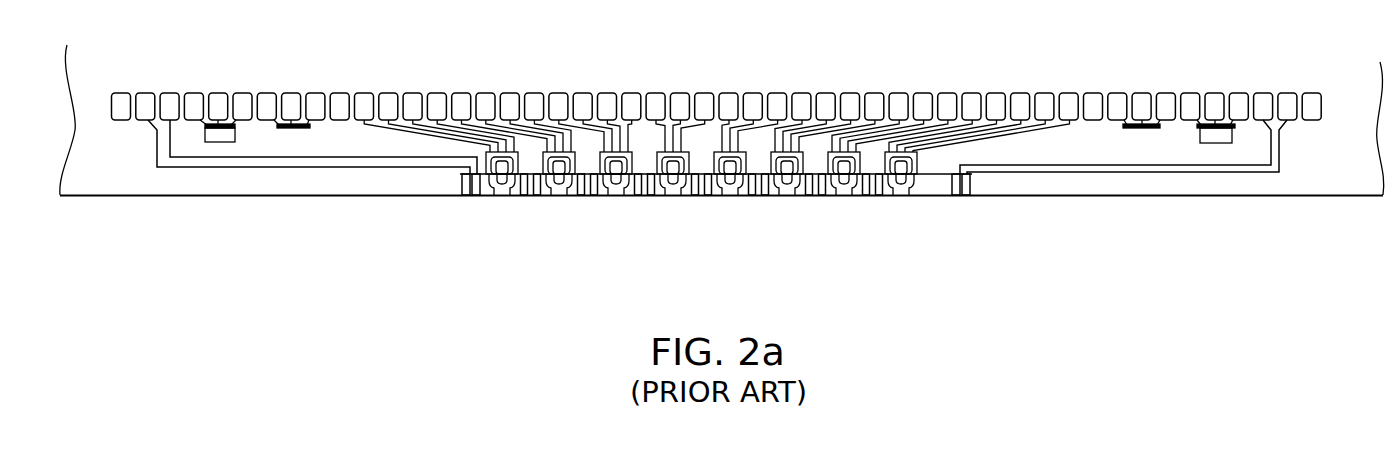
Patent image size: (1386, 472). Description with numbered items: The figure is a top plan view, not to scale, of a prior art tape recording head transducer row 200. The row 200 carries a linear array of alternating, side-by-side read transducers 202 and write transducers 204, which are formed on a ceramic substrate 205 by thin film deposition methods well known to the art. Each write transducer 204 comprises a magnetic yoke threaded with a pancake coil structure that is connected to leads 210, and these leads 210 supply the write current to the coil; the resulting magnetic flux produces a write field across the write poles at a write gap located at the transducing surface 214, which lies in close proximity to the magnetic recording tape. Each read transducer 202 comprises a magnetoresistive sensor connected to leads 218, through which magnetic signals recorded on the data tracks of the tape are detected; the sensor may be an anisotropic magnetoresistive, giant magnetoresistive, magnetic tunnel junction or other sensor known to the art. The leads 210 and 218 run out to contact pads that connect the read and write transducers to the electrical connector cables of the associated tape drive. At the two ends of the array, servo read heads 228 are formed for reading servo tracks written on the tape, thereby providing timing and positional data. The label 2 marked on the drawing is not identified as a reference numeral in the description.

The tape recording head transducer row 200 is at (937, 278).
The contact pads 2 is at (392, 93).
The ceramic substrate 205 is at (137, 178).
The transducing surface 214 is at (262, 196).
The leads 210 is at (430, 140).
The leads 218 is at (470, 128).
The read transducer 202 is at (585, 196).
The write transducer 204 is at (497, 196).
The servo read heads 228 is at (460, 180).